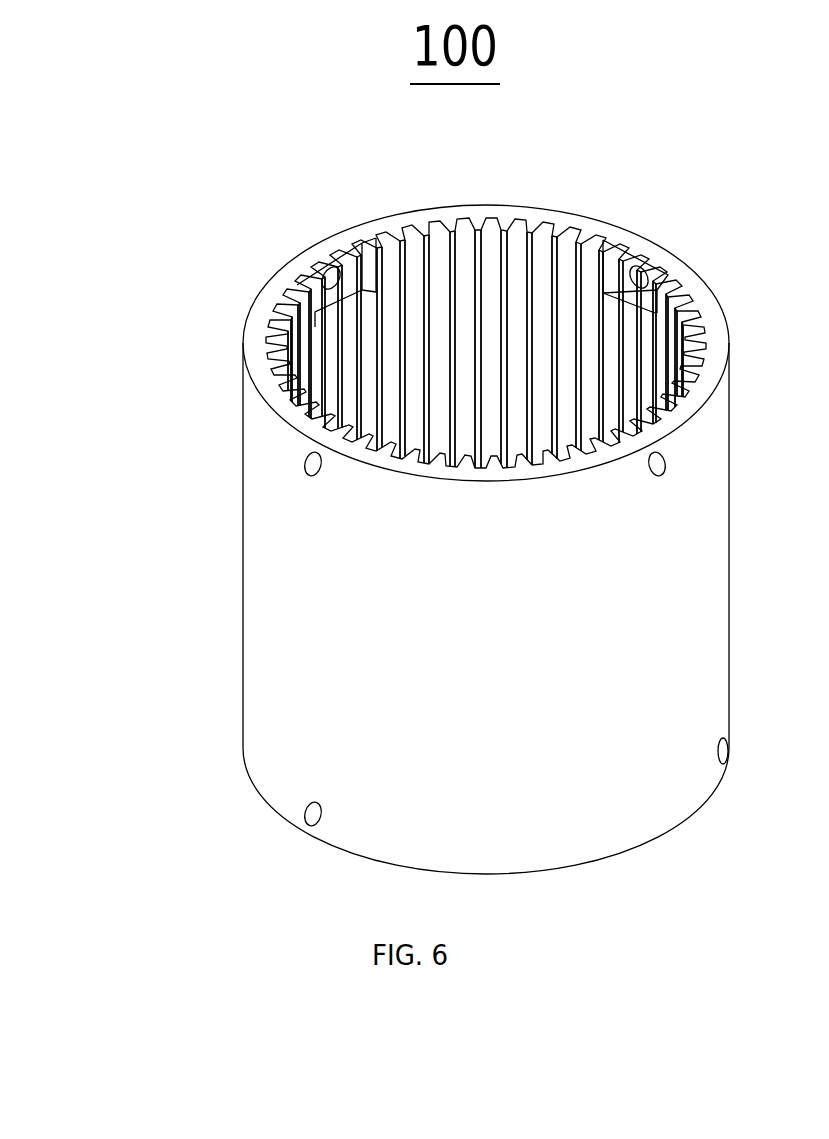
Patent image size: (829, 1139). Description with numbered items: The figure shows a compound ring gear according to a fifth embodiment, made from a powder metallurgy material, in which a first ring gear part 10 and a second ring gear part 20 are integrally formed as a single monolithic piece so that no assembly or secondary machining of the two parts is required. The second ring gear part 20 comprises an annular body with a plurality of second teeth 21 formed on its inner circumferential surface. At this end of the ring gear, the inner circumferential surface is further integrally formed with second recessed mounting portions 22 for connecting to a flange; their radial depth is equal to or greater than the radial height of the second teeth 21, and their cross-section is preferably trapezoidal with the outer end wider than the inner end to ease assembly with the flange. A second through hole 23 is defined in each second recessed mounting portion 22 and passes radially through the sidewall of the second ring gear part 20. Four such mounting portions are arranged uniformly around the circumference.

The first ring gear part 10 is at (283, 743).
The second ring gear part 20 is at (260, 430).
The second teeth 21 is at (480, 345).
The second recessed mounting portions 22 is at (353, 280).
The second through holes 23 is at (327, 278).